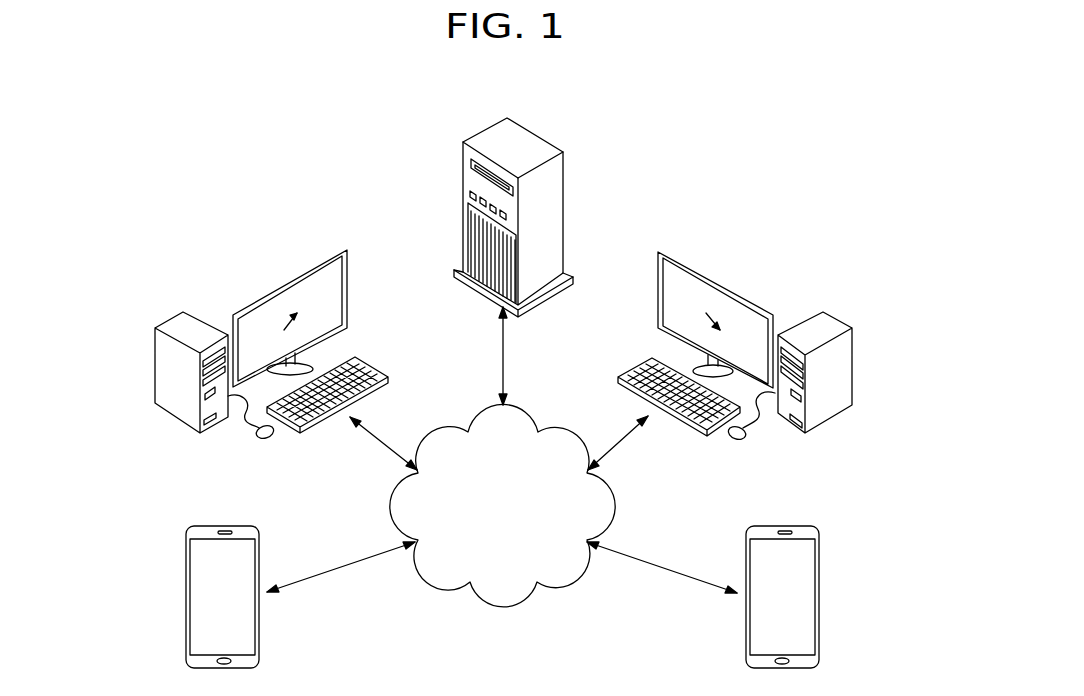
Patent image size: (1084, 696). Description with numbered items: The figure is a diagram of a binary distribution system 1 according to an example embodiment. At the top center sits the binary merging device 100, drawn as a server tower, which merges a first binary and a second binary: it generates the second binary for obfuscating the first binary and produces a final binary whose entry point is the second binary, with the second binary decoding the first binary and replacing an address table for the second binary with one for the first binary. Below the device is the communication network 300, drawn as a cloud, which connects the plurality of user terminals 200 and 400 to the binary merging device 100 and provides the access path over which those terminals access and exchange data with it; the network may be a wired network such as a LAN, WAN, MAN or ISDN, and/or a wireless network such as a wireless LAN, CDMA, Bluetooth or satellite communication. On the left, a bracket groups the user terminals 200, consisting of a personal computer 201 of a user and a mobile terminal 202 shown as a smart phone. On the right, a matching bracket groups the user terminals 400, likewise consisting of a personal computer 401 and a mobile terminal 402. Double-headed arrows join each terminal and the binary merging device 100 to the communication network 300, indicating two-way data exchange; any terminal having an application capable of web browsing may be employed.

The binary distribution system 1 is at (769, 118).
The binary merging device 100 is at (538, 129).
The user terminals 200 is at (103, 440).
The personal computer 201 is at (183, 420).
The mobile terminal 202 is at (186, 567).
The communication network 300 is at (522, 409).
The user terminals 400 is at (903, 438).
The personal computer 401 is at (832, 428).
The mobile terminal 402 is at (820, 565).